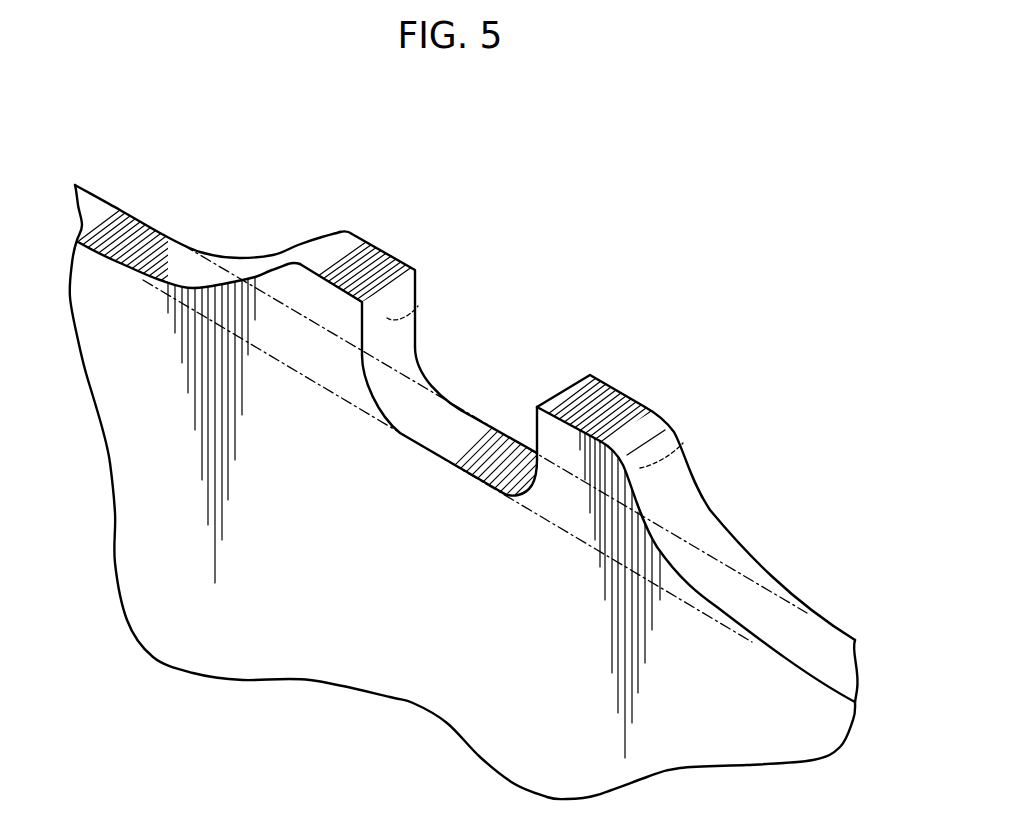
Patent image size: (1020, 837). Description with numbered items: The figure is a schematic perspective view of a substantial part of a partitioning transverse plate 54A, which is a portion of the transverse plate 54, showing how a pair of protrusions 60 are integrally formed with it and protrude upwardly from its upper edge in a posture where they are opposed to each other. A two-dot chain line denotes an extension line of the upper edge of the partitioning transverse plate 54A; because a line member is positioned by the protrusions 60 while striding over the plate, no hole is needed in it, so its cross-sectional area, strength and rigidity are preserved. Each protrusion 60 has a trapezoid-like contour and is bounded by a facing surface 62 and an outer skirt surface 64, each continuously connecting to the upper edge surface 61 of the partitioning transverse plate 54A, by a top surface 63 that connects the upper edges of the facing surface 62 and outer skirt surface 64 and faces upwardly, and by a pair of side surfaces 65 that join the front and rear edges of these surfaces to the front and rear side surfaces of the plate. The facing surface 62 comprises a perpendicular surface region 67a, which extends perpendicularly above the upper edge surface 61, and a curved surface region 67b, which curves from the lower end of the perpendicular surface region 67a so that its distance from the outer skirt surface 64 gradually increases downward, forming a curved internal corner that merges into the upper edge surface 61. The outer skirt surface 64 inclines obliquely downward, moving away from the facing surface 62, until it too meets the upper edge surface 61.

The transverse plate 54 is at (462, 492).
The partitioning transverse plate 54A is at (343, 634).
The protrusion 60 is at (553, 446).
The upper edge surface 61 is at (120, 230).
The facing surface 62 is at (596, 547).
The top surface 63 is at (372, 268).
The outer skirt surface 64 is at (260, 272).
The side surface 65 is at (418, 306).
The perpendicular surface region 67a is at (395, 346).
The curved surface region 67b is at (398, 392).